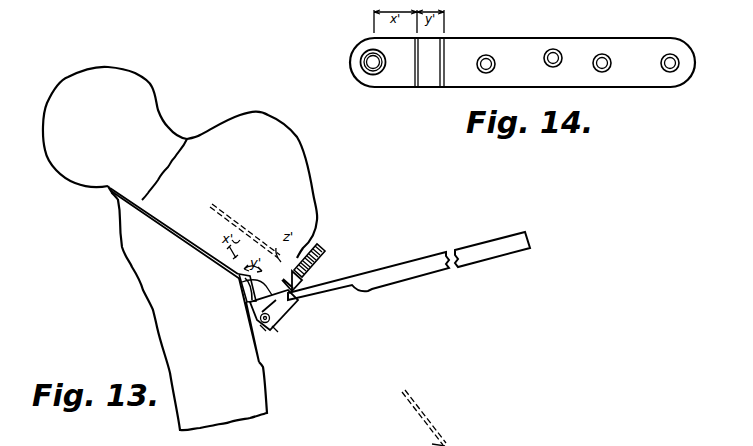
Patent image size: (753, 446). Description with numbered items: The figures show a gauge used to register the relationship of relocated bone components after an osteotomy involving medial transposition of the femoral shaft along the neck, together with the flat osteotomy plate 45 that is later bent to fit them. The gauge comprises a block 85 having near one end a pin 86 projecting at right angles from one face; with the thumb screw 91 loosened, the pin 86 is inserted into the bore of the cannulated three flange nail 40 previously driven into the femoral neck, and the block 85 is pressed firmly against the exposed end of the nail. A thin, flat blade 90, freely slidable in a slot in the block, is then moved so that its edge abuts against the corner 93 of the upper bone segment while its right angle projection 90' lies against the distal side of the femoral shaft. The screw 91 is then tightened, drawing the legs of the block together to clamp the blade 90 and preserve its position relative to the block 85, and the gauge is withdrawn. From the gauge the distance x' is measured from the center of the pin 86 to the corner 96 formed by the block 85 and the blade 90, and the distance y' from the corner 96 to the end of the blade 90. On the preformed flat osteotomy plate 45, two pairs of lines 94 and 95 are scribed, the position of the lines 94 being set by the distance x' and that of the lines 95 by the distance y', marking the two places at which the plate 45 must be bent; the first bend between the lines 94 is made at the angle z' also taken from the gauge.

In FIG. 13, the three flange nail 40 is at (298, 258).
In FIG. 13, the osteotomy plate 45 is at (486, 418).
In FIG. 14, the osteotomy plate 45 is at (537, 48).
In FIG. 13, the block 85 is at (282, 313).
In FIG. 13, the pin 86 is at (229, 217).
In FIG. 13, the blade 90 is at (409, 270).
In FIG. 13, the right angle projection 90' is at (239, 320).
In FIG. 13, the thumb screw 91 is at (278, 325).
In FIG. 13, the corner 93 is at (243, 290).
In FIG. 14, the pair of lines 94 is at (416, 74).
In FIG. 14, the pair of lines 95 is at (445, 50).
In FIG. 13, the corner 96 is at (289, 300).